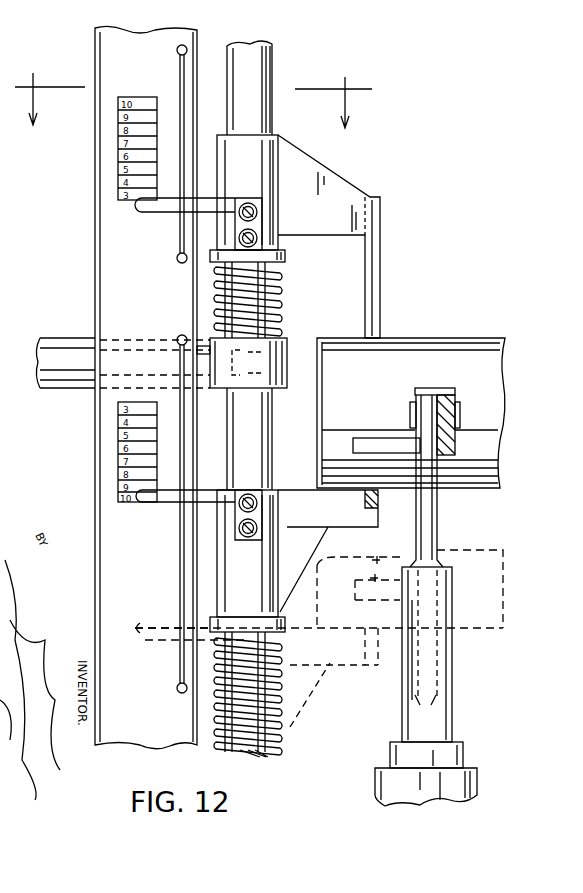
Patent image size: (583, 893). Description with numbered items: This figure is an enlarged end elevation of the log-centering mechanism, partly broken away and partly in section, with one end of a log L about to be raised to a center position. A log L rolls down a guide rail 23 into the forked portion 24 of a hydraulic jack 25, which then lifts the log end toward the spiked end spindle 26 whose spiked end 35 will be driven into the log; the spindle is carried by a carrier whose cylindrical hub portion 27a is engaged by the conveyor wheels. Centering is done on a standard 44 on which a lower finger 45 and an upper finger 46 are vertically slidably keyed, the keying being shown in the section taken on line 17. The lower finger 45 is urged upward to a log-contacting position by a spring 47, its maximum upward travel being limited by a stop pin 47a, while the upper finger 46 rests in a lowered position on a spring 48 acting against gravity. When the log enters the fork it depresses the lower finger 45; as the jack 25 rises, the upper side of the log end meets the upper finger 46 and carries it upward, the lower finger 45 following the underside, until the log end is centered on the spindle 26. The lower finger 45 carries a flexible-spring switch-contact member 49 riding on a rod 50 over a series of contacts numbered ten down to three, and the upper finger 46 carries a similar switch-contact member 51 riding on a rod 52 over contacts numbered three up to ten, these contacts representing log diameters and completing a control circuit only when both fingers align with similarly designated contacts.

The section line 17- 17 is at (191, 95).
The standard 44 is at (250, 60).
The flexible-spring switch-contact member 51 is at (168, 207).
The rod 52 is at (182, 68).
The spring 48 is at (275, 283).
The finger 46 is at (372, 286).
The cylindrical hub portion 27a is at (68, 352).
The spiked end spindle 26 is at (205, 345).
The spiked end 35 is at (300, 365).
The flexible-spring switch-contact member 49 is at (170, 504).
The rod 50 is at (182, 570).
The spring 47 is at (280, 730).
The finger 45 is at (365, 500).
The log L is at (505, 345).
The stop pin 47a is at (370, 440).
The guide rail 23 is at (455, 438).
The forked portion 24 is at (440, 522).
The hydraulic jack 25 is at (455, 793).